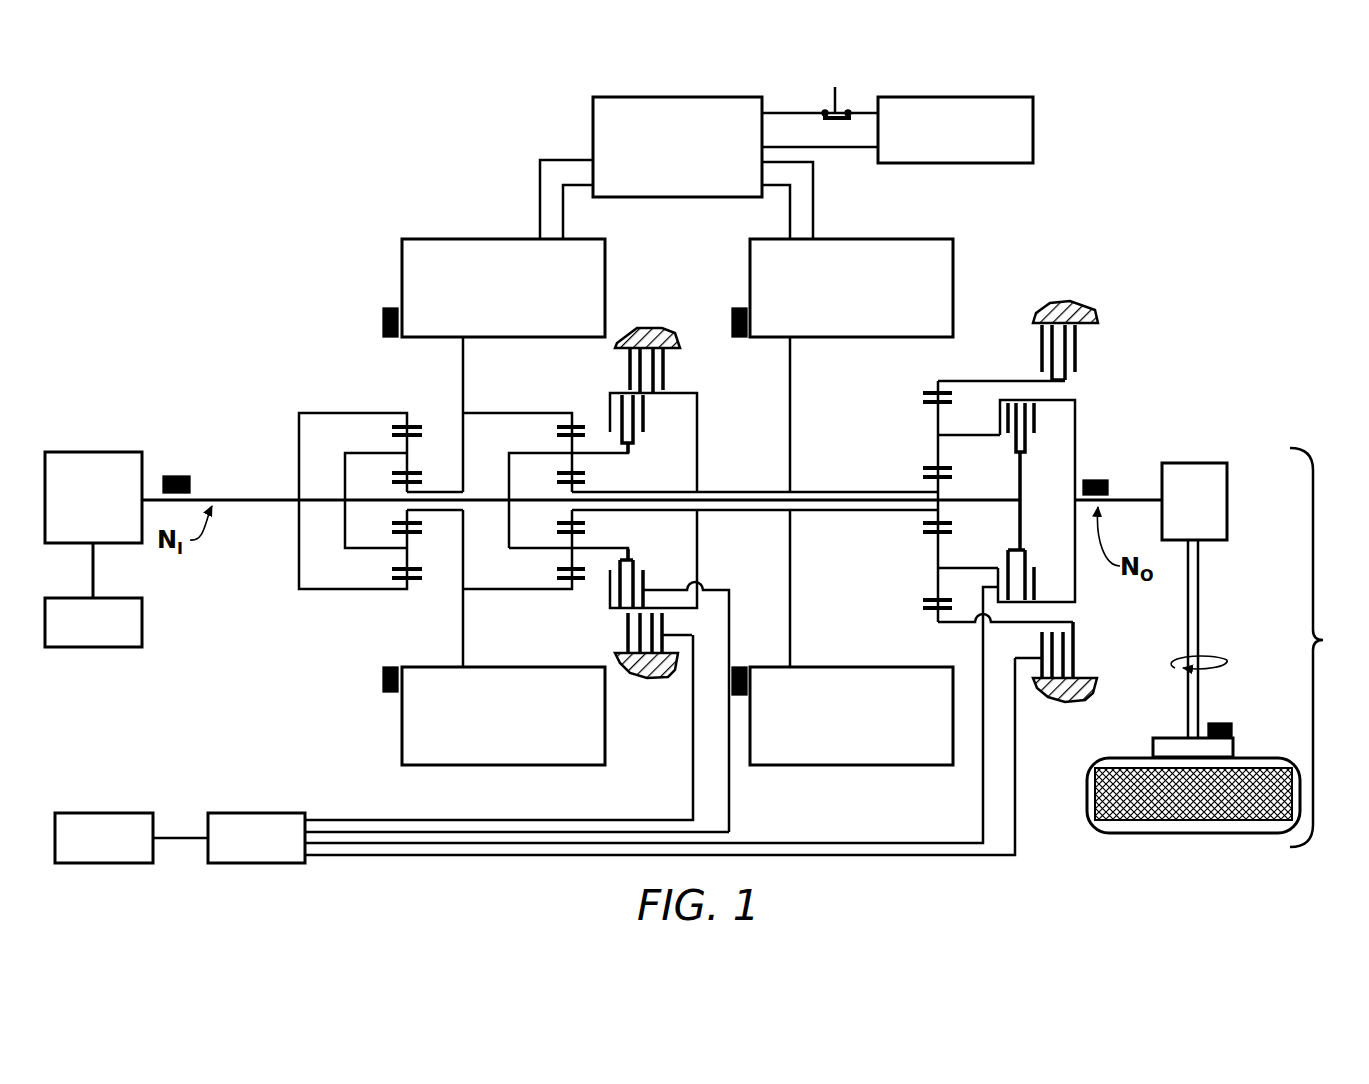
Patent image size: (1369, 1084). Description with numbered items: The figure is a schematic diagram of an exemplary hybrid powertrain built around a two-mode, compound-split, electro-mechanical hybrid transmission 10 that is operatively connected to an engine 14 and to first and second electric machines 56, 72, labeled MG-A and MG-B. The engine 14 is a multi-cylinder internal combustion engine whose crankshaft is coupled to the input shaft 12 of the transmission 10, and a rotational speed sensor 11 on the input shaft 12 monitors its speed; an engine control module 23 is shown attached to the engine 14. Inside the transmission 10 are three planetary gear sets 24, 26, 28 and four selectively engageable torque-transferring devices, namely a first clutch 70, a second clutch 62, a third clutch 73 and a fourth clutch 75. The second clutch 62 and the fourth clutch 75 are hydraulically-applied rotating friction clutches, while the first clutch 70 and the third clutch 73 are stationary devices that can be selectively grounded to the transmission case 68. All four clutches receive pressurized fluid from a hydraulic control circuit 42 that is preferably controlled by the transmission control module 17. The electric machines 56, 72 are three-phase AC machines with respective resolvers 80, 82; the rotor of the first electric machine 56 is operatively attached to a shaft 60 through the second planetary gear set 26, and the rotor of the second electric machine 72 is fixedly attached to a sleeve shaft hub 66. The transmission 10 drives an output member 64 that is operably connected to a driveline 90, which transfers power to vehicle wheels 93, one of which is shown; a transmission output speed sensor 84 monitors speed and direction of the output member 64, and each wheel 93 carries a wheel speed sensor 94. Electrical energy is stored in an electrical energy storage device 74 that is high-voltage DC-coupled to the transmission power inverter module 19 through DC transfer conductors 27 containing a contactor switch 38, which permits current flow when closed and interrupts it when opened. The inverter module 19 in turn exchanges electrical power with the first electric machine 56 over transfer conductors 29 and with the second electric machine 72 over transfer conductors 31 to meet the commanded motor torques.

The electro-mechanical hybrid transmission 10 is at (358, 196).
The rotational speed sensor 11 is at (177, 476).
The input shaft 12 is at (258, 498).
The engine 14 is at (100, 452).
The transmission control module 17 is at (95, 813).
The transmission power inverter module 19 is at (593, 112).
The engine control module 23 is at (145, 645).
The first planetary gear set 24 is at (395, 406).
The second planetary gear set 26 is at (565, 406).
The DC transfer conductors 27 is at (775, 112).
The third planetary gear set 28 is at (928, 379).
The transfer conductors 29 is at (540, 192).
The transfer conductors 31 is at (813, 192).
The contactor switch 38 is at (836, 92).
The hydraulic control circuit 42 is at (222, 813).
The first electric machine 56 is at (402, 272).
The shaft 60 is at (990, 498).
The clutch C2 62 is at (1037, 442).
The output member 64 is at (1130, 497).
The sleeve shaft hub 66 is at (828, 492).
The transmission case 68 is at (648, 330).
The clutch C1 70 is at (1032, 347).
The second electric machine 72 is at (953, 252).
The clutch C3 73 is at (668, 372).
The electrical energy storage device 74 is at (1033, 108).
The clutch C4 75 is at (650, 426).
The resolver 80 is at (383, 320).
The resolver 82 is at (740, 306).
The transmission output speed sensor 84 is at (1097, 478).
The driveline 90 is at (1222, 647).
The vehicle wheel 93 is at (1153, 748).
The wheel speed sensor 94 is at (1220, 723).